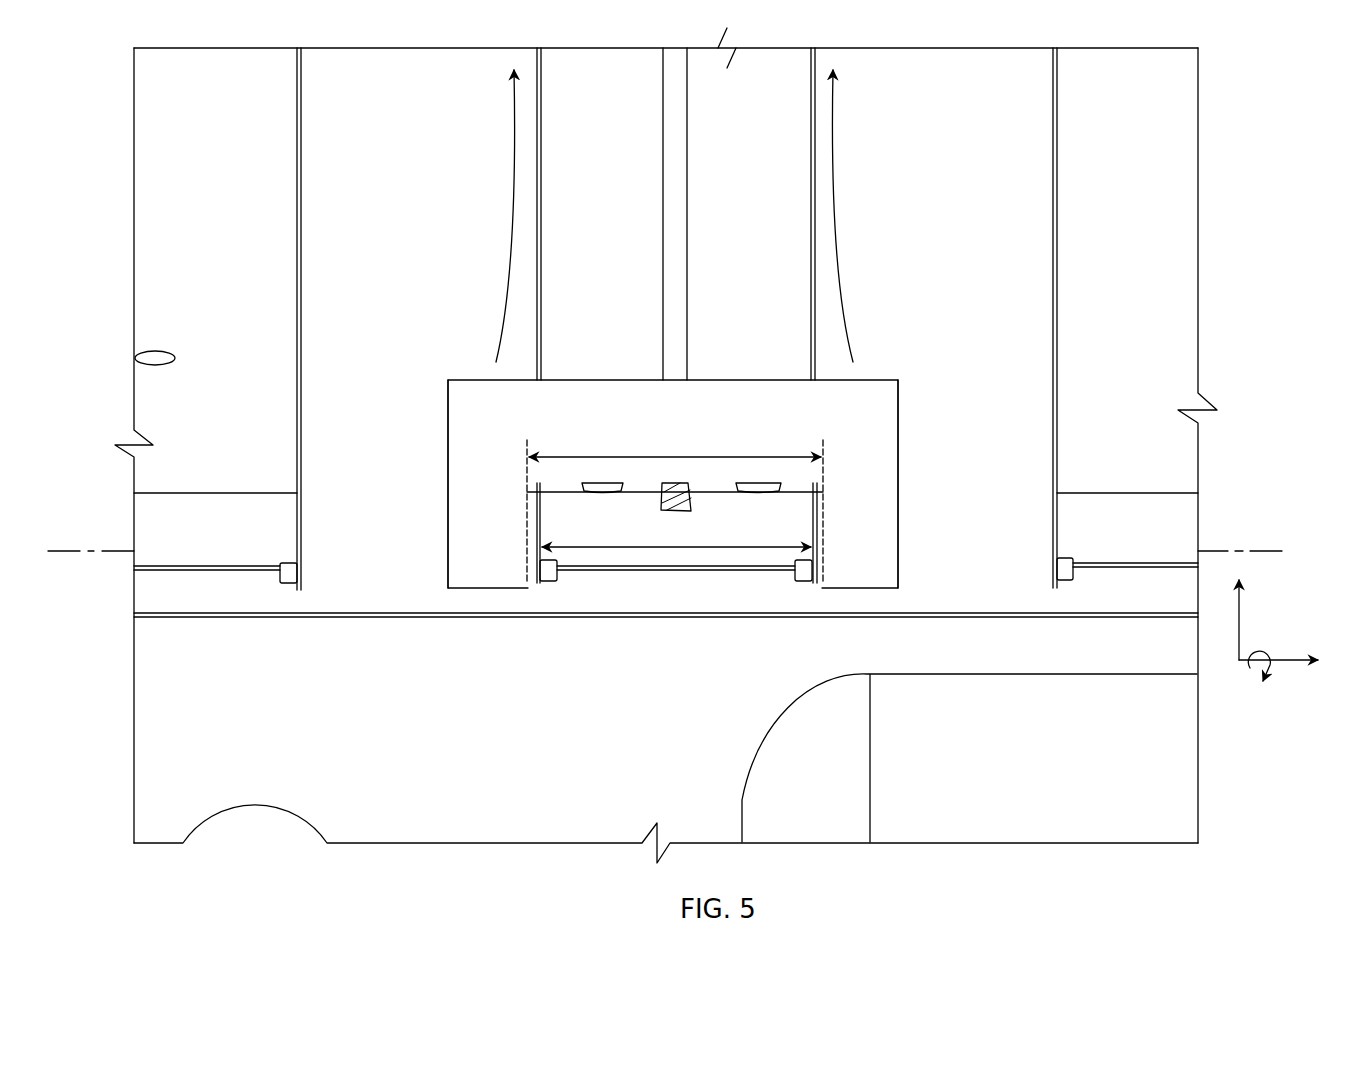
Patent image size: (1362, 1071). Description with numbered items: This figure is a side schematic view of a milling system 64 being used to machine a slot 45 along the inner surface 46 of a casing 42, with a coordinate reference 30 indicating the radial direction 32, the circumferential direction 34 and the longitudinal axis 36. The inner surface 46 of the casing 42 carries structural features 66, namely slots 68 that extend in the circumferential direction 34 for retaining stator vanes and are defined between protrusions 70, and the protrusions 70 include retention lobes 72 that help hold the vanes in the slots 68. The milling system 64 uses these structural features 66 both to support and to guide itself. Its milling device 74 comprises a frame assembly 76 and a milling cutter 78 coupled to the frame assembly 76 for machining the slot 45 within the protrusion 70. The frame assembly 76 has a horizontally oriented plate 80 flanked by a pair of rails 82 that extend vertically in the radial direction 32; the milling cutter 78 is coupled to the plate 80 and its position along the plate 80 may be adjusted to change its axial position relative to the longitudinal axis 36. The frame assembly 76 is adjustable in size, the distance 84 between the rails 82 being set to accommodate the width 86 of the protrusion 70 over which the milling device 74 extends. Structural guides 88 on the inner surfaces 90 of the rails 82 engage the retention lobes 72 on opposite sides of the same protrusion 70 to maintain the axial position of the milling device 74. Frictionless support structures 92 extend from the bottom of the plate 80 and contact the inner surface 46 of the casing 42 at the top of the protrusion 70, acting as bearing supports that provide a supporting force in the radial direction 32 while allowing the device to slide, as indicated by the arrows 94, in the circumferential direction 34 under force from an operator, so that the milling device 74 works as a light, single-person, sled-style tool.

The coordinate system 30 is at (1282, 667).
The radial direction 32 is at (1240, 620).
The circumferential direction 34 is at (1272, 647).
The longitudinal axis 36 is at (1240, 540).
The casing 42 is at (1198, 310).
The slot 45 is at (687, 122).
The inner surface 46 is at (1198, 225).
The milling system 64 is at (663, 530).
The structural features 66 is at (305, 527).
The slots 68 is at (411, 586).
The protrusions 70 is at (262, 495).
The retention lobes 72 is at (299, 576).
The milling device 74 is at (886, 372).
The frame assembly 76 is at (717, 375).
The milling cutter 78 is at (690, 508).
The plate 80 is at (607, 378).
The rails 82 is at (447, 470).
The distance 84 is at (673, 455).
The width 86 is at (620, 550).
The structural guides 88 is at (551, 582).
The inner surfaces 90 is at (527, 518).
The frictionless support structures 92 is at (600, 493).
The arrows 94 is at (512, 183).